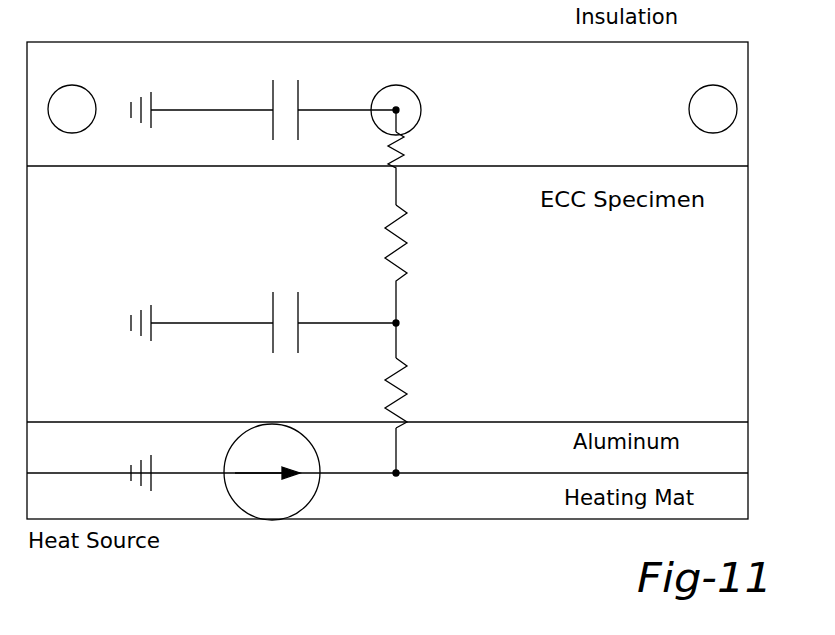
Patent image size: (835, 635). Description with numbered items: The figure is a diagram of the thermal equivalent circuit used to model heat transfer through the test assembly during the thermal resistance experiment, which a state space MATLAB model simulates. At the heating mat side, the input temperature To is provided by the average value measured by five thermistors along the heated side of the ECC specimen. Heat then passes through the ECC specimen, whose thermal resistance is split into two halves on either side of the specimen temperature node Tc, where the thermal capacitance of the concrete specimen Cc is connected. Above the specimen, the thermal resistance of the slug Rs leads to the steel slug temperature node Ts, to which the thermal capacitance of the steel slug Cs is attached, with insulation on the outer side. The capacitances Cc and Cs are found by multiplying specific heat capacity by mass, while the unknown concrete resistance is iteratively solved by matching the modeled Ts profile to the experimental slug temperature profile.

The steel slug temperature Ts is at (399, 94).
The thermal resistance of the slug Rs is at (414, 152).
The thermal capacitance of the steel slug Cs is at (247, 118).
The concrete specimen temperature Tc is at (417, 326).
The thermal capacitance of the concrete specimen Cc is at (248, 319).
The input temperature To is at (419, 457).